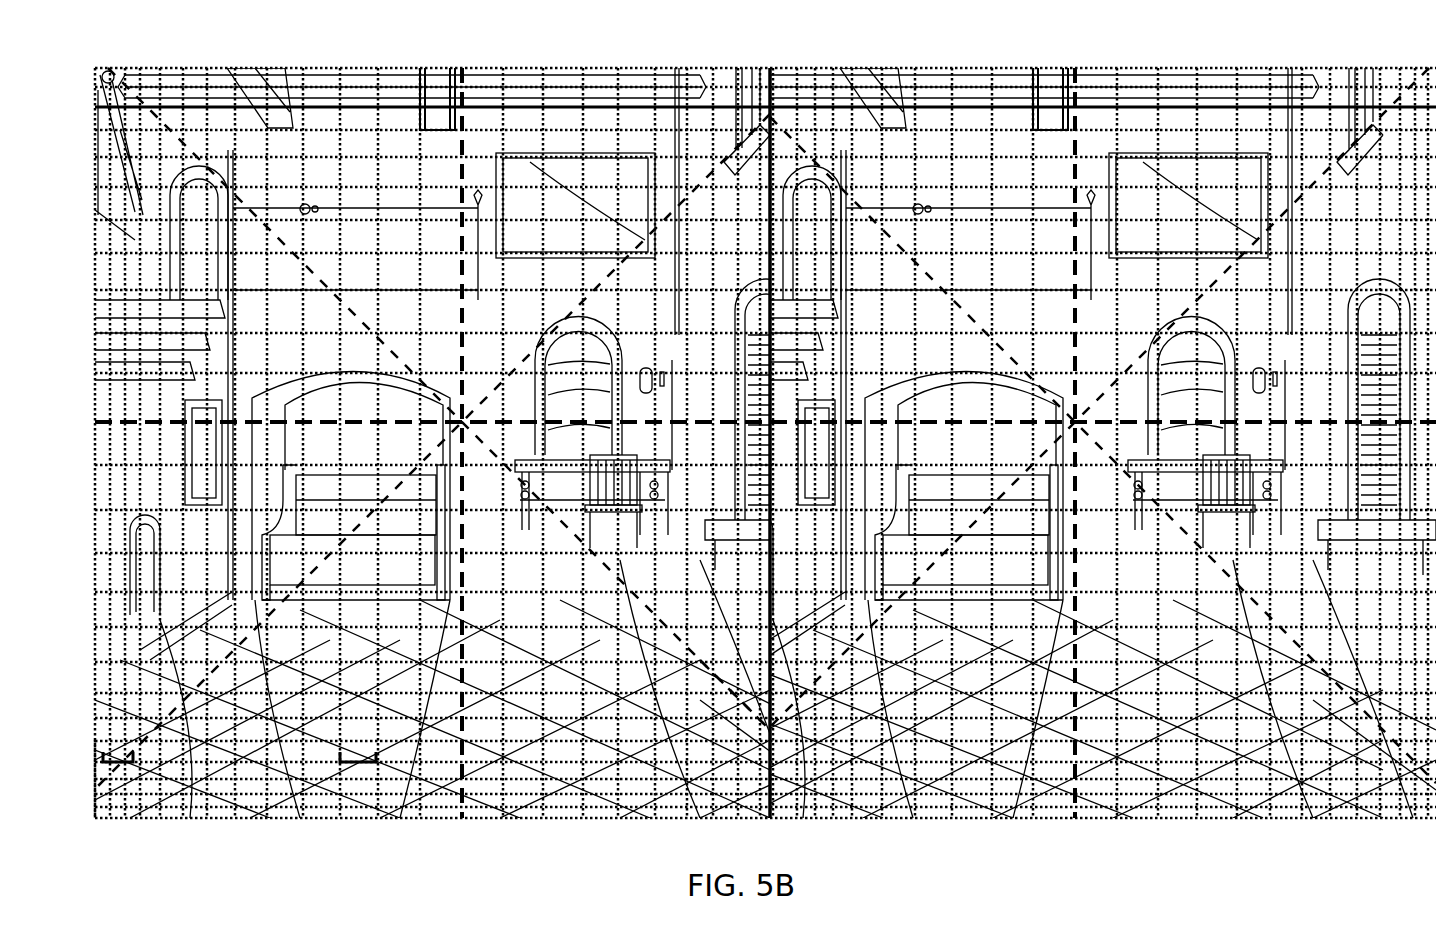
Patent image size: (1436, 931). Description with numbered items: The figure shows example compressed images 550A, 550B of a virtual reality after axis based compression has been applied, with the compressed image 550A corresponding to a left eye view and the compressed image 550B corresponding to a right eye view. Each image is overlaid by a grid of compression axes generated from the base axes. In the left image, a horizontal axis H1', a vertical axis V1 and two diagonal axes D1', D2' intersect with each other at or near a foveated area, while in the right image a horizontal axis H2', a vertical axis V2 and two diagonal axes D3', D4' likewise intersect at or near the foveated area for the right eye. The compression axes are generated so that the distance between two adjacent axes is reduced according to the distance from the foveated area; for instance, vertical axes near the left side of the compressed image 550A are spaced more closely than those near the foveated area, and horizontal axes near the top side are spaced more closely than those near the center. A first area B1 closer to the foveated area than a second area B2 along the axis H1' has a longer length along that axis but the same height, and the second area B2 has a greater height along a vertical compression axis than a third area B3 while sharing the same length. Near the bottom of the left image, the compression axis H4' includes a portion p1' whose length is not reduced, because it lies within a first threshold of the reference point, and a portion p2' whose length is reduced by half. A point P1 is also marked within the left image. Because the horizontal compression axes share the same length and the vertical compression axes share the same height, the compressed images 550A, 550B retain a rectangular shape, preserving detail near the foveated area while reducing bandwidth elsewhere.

The compressed image 550A is at (122, 414).
The compressed image 550B is at (811, 414).
The vertical axis V1 is at (470, 78).
The vertical axis V2 is at (1083, 78).
The horizontal axis H1' is at (432, 454).
The horizontal axis H2' is at (1103, 458).
The compression axis H4' is at (101, 787).
The diagonal axis D1' is at (439, 399).
The diagonal axis D2' is at (432, 451).
The diagonal axis D3' is at (1099, 397).
The diagonal axis D4' is at (1103, 450).
The first point P1 is at (362, 396).
The first area B1 is at (528, 400).
The second area B2 is at (714, 405).
The third area B3 is at (712, 770).
The portion of the compression axis p1' is at (358, 742).
The portion of the compression axis p2' is at (121, 744).